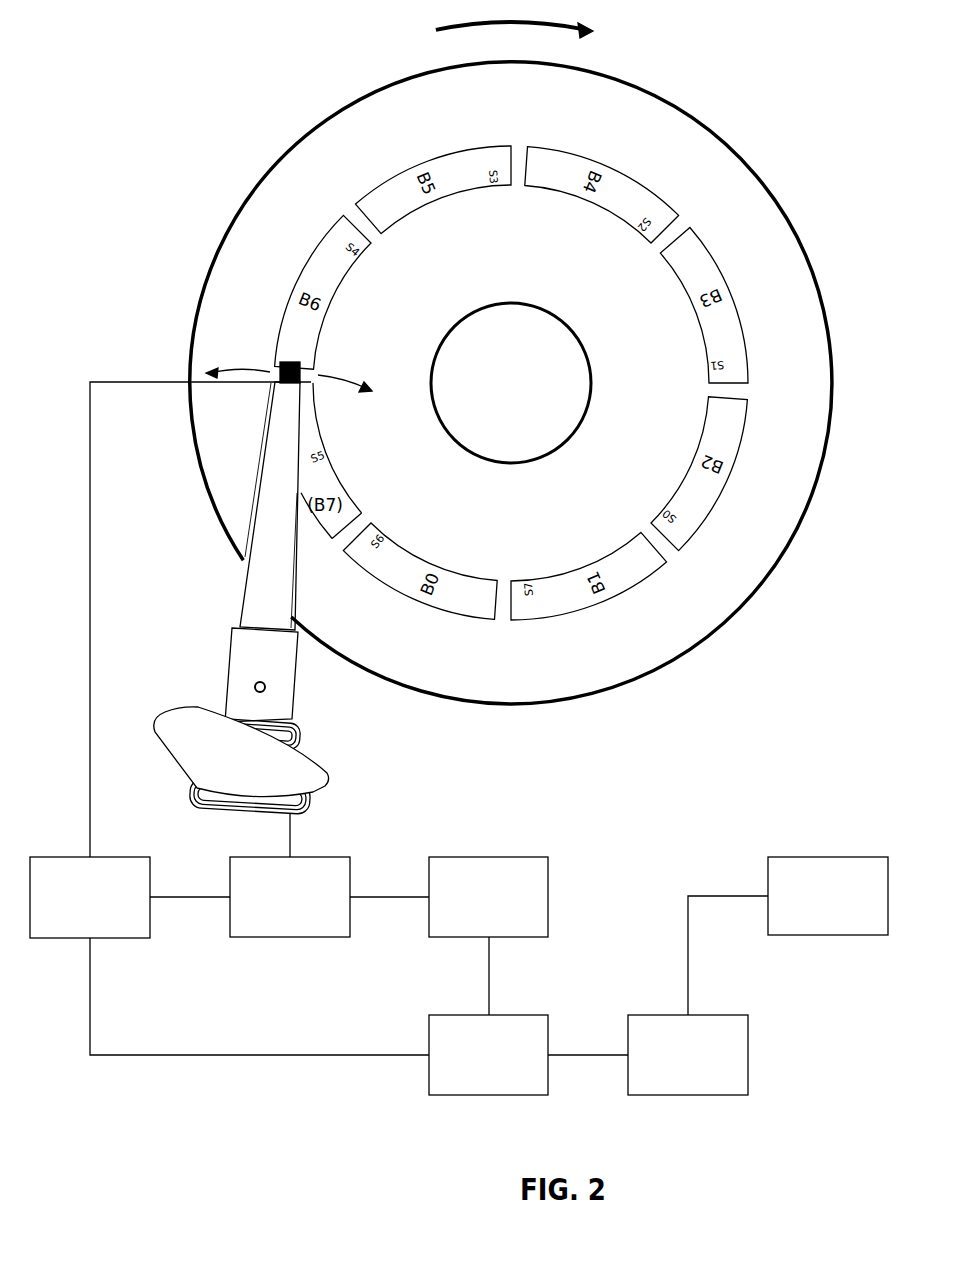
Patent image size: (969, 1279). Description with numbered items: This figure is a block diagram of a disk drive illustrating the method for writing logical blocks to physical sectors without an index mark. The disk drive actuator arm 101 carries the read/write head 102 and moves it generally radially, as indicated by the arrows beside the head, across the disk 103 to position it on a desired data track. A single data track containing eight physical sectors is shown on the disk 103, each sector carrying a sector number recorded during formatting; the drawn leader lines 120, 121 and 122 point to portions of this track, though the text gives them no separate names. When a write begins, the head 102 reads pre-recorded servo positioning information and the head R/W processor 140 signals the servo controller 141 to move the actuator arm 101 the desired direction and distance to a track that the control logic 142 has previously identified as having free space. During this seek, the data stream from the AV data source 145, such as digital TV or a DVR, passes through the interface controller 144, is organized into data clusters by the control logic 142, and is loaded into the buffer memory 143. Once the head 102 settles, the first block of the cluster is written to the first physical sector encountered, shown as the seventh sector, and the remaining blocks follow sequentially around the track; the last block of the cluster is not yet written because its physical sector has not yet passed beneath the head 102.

The actuator arm 101 is at (240, 619).
The read/write head 102 is at (252, 368).
The disk 103 is at (472, 363).
The band boundary 120 is at (543, 679).
The servo sector boundary 121 is at (734, 617).
The band B7 boundary 122 is at (381, 564).
The head R/W processor 140 is at (90, 897).
The servo controller 141 is at (290, 897).
The control logic 142 is at (488, 897).
The buffer memory 143 is at (488, 1055).
The interface controller 144 is at (688, 1055).
The AV data source 145 is at (828, 896).